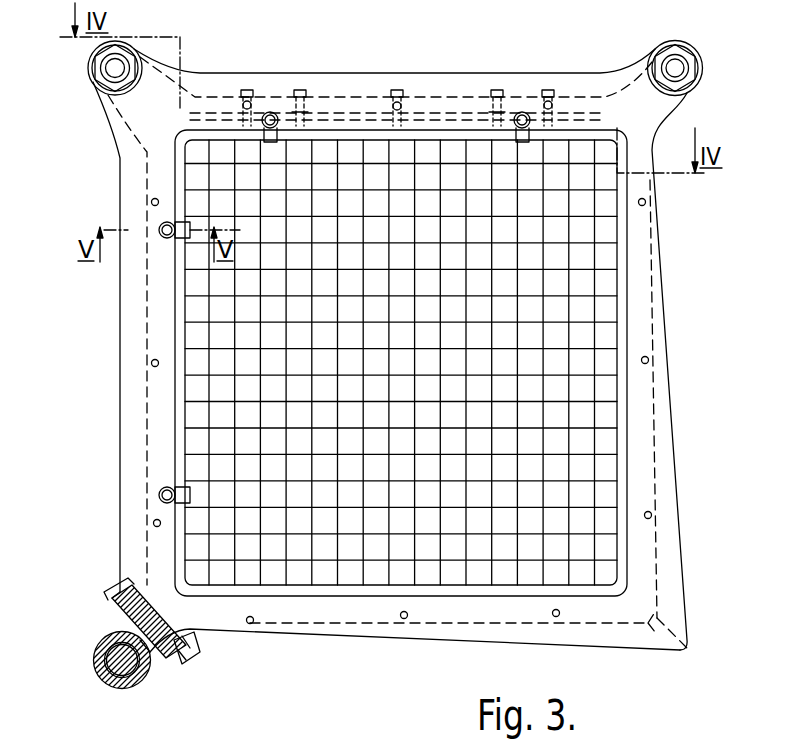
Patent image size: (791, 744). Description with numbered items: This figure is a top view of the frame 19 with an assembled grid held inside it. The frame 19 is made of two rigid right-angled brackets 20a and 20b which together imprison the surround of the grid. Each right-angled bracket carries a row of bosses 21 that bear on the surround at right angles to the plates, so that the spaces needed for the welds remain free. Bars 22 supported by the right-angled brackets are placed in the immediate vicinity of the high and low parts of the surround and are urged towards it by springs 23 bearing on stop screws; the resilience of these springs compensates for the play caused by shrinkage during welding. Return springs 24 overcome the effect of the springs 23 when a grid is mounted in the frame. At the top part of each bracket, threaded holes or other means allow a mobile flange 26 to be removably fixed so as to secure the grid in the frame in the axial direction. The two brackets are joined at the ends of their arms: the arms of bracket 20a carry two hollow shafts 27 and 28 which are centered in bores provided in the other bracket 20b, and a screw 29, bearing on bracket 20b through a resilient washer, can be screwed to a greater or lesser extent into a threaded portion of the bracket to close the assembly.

The frame 19 is at (398, 639).
The right-angled bracket 20a is at (132, 302).
The right-angled bracket 20b is at (602, 635).
The bosses 21 is at (182, 412).
The bars 22 is at (345, 128).
The springs 23 is at (408, 92).
The return springs 24 is at (305, 93).
The mobile flange 26 is at (250, 100).
The hollow shaft 27 is at (672, 67).
The hollow shaft 28 is at (121, 659).
The screw 29 is at (187, 653).